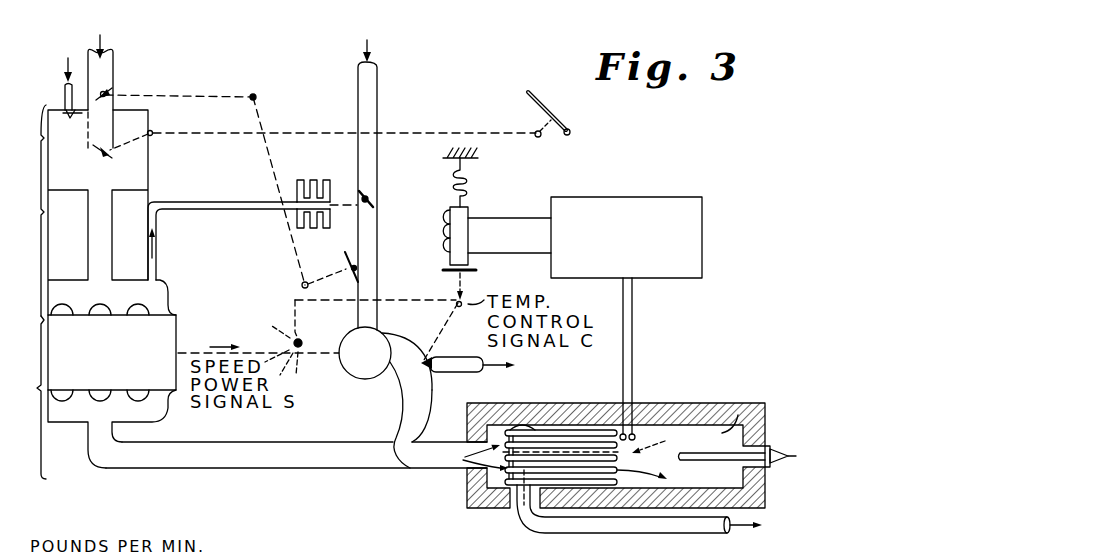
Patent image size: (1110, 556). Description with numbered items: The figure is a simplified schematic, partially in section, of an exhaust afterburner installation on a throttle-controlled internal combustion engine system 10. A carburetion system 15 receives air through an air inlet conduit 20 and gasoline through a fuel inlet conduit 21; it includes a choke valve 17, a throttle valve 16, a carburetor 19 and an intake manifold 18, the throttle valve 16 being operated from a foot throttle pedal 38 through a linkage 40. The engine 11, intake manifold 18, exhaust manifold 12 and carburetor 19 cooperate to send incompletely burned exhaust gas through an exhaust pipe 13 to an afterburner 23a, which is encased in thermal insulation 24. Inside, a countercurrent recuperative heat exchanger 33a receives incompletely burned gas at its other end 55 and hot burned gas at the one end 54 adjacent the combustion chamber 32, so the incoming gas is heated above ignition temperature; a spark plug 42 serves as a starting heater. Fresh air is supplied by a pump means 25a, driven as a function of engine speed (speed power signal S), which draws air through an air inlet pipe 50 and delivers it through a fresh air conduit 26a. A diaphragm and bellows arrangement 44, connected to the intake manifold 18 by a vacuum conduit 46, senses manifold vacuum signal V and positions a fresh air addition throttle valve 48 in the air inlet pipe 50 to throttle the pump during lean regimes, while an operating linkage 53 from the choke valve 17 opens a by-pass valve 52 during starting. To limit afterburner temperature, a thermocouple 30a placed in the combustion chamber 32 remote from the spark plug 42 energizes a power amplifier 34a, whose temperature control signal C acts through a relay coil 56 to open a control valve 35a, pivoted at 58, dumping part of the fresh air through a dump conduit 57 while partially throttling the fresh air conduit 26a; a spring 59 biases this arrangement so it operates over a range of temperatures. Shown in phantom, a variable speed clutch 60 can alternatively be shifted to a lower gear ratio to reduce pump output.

The internal combustion engine system 10 is at (36, 383).
The engine 11 is at (178, 324).
The exhaust manifold 12 is at (166, 418).
The exhaust pipe 13 is at (237, 443).
The carburetion system 15 is at (36, 200).
The throttle valve 16 is at (95, 150).
The choke valve 17 is at (113, 91).
The intake manifold 18 is at (169, 294).
The carburetor 19 is at (150, 149).
The air inlet conduit 20 is at (113, 56).
The fuel inlet conduit 21 is at (62, 101).
The afterburner 23a is at (716, 360).
The thermal insulation 24 is at (762, 412).
The pump means 25a is at (350, 378).
The fresh air conduit 26a is at (404, 424).
The thermocouple 30a is at (634, 432).
The combustion chamber 32 is at (740, 410).
The heat exchanger 33a is at (512, 497).
The power amplifier 34a is at (645, 197).
The control valve 35a is at (422, 352).
The foot throttle pedal 38 is at (527, 94).
The linkage 40 is at (419, 133).
The spark plug 42 is at (788, 460).
The diaphragm and bellows arrangement 44 is at (318, 180).
The vacuum conduit 46 is at (158, 268).
The fresh air addition throttle valve 48 is at (370, 198).
The air inlet pipe 50 is at (377, 258).
The by-pass valve 52 is at (344, 255).
The operating linkage 53 is at (258, 100).
The one end of heat exchanger 54 is at (621, 430).
The other end of heat exchanger 55 is at (496, 422).
The relay coil 56 is at (470, 233).
The dump conduit 57 is at (446, 357).
The pivot 58 is at (436, 373).
The spring 59 is at (466, 190).
The variable speed clutch 60 is at (299, 338).